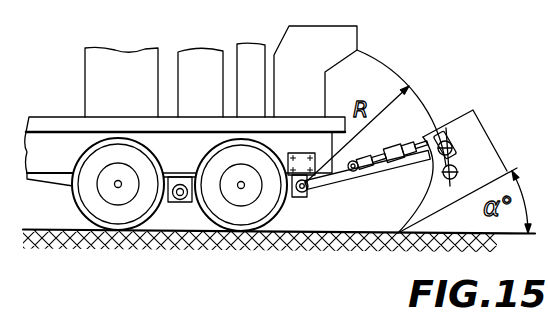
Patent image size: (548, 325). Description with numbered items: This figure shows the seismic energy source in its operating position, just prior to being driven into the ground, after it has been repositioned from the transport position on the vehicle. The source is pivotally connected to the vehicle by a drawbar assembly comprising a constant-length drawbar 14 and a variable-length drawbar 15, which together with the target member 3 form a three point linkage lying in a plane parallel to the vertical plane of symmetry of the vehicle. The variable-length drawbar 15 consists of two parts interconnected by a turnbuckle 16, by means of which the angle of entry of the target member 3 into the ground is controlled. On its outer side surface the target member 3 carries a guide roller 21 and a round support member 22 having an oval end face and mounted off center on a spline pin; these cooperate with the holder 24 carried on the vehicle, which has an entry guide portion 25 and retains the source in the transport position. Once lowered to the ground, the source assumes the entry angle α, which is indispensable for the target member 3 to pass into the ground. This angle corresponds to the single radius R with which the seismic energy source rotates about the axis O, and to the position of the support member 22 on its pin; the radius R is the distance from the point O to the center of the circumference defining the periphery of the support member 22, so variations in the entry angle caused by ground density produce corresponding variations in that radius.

The target member 3 is at (485, 136).
The drawbar 14 is at (396, 171).
The drawbar 15 is at (383, 145).
The turnbuckle 16 is at (366, 169).
The guide roller 21 is at (457, 128).
The support member 22 is at (458, 171).
The holder 24 is at (274, 38).
The entry guide portion 25 is at (347, 32).
The axis O is at (306, 196).